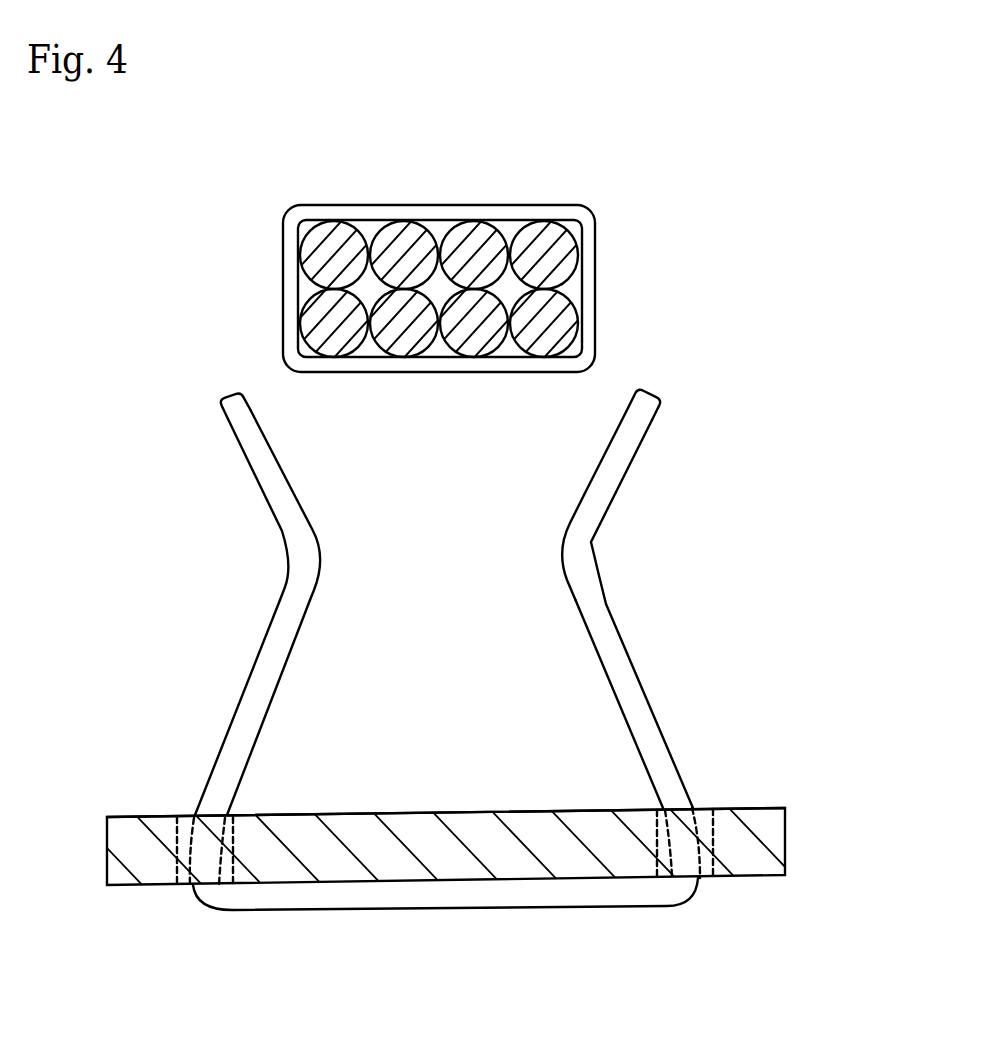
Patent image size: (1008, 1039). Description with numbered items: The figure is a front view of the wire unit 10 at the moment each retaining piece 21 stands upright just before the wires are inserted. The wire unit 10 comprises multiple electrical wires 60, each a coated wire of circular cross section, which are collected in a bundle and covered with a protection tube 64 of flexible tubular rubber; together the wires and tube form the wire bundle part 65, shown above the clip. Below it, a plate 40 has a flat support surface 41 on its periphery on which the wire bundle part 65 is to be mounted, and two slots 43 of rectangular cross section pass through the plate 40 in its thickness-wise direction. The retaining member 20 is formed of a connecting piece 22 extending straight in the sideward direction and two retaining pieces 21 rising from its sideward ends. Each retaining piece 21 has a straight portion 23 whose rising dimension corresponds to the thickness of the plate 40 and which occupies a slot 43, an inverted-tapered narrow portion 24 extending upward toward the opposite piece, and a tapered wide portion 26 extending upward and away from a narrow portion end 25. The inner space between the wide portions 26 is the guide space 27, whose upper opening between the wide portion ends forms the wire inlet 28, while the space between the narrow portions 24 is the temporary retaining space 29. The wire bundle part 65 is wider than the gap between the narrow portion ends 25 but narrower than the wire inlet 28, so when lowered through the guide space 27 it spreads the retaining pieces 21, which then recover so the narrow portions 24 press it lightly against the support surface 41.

The wire unit 10 is at (838, 413).
The retaining member 20 is at (427, 659).
The retaining piece 21 is at (226, 400).
The connecting piece 22 is at (445, 906).
The straight portion 23 is at (190, 860).
The narrow portion 24 is at (247, 688).
The narrow portion end 25 is at (289, 556).
The wide portion 26 is at (255, 465).
The guide space 27 is at (496, 524).
The wire inlet 28 is at (310, 404).
The temporary retaining space 29 is at (493, 673).
The plate 40 is at (782, 848).
The support surface 41 is at (768, 808).
The slot 43 is at (187, 817).
The electrical wire 60 is at (558, 325).
The protection tube 64 is at (521, 210).
The wire bundle part 65 is at (437, 208).